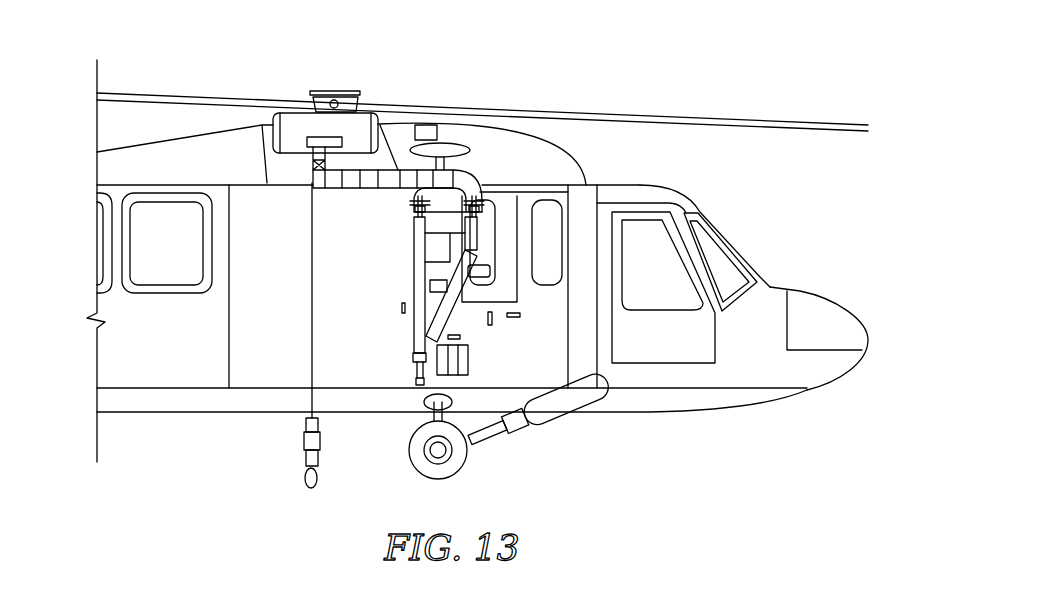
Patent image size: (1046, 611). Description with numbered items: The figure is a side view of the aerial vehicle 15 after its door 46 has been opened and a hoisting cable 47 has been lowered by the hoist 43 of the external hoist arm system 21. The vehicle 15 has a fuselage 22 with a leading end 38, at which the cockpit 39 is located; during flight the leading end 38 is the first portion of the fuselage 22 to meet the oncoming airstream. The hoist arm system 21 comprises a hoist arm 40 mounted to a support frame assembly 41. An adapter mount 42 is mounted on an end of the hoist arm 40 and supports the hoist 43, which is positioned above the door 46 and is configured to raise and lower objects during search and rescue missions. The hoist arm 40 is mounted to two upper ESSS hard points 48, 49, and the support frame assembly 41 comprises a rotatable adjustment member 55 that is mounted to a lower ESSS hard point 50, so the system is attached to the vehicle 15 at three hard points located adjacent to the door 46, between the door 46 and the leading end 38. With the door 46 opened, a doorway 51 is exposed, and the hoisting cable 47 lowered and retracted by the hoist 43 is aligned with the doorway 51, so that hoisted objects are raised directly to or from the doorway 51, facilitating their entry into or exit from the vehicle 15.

The vehicle 15 is at (758, 216).
The hoist arm system 21 is at (467, 168).
The fuselage 22 is at (660, 184).
The leading end 38 is at (834, 395).
The cockpit 39 is at (728, 260).
The hoist arm 40 is at (468, 178).
The support frame assembly 41 is at (412, 289).
The adapter mount 42 is at (305, 165).
The hoist 43 is at (286, 113).
The door 46 is at (177, 193).
The hoisting cable 47 is at (311, 288).
The upper ESSS hard point 48 is at (409, 213).
The upper ESSS hard point 49 is at (489, 213).
The lower ESSS hard point 50 is at (418, 386).
The doorway 51 is at (253, 213).
The rotatable adjustment member 55 is at (412, 356).